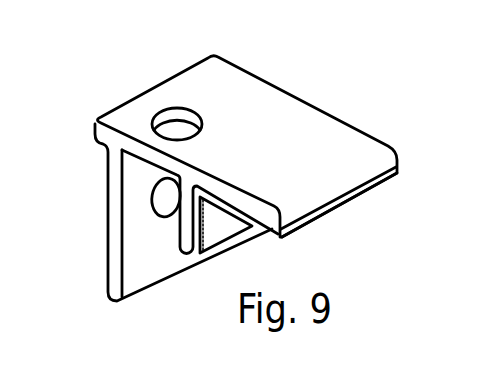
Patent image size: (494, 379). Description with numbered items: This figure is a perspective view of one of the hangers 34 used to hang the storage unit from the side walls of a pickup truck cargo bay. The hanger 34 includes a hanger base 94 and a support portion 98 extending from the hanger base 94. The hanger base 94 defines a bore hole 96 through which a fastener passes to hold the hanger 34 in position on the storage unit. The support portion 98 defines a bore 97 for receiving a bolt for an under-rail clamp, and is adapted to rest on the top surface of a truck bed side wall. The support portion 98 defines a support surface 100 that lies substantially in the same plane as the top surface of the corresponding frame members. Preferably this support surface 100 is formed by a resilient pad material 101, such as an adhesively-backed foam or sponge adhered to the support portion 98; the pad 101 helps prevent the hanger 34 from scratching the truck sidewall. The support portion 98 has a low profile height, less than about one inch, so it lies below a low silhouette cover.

The hanger 34 is at (297, 70).
The hanger base 94 is at (107, 238).
The bore hole 96 is at (163, 206).
The bore 97 is at (167, 108).
The support portion 98 is at (355, 120).
The support surface 100 is at (322, 218).
The resilient pad material 101 is at (231, 210).